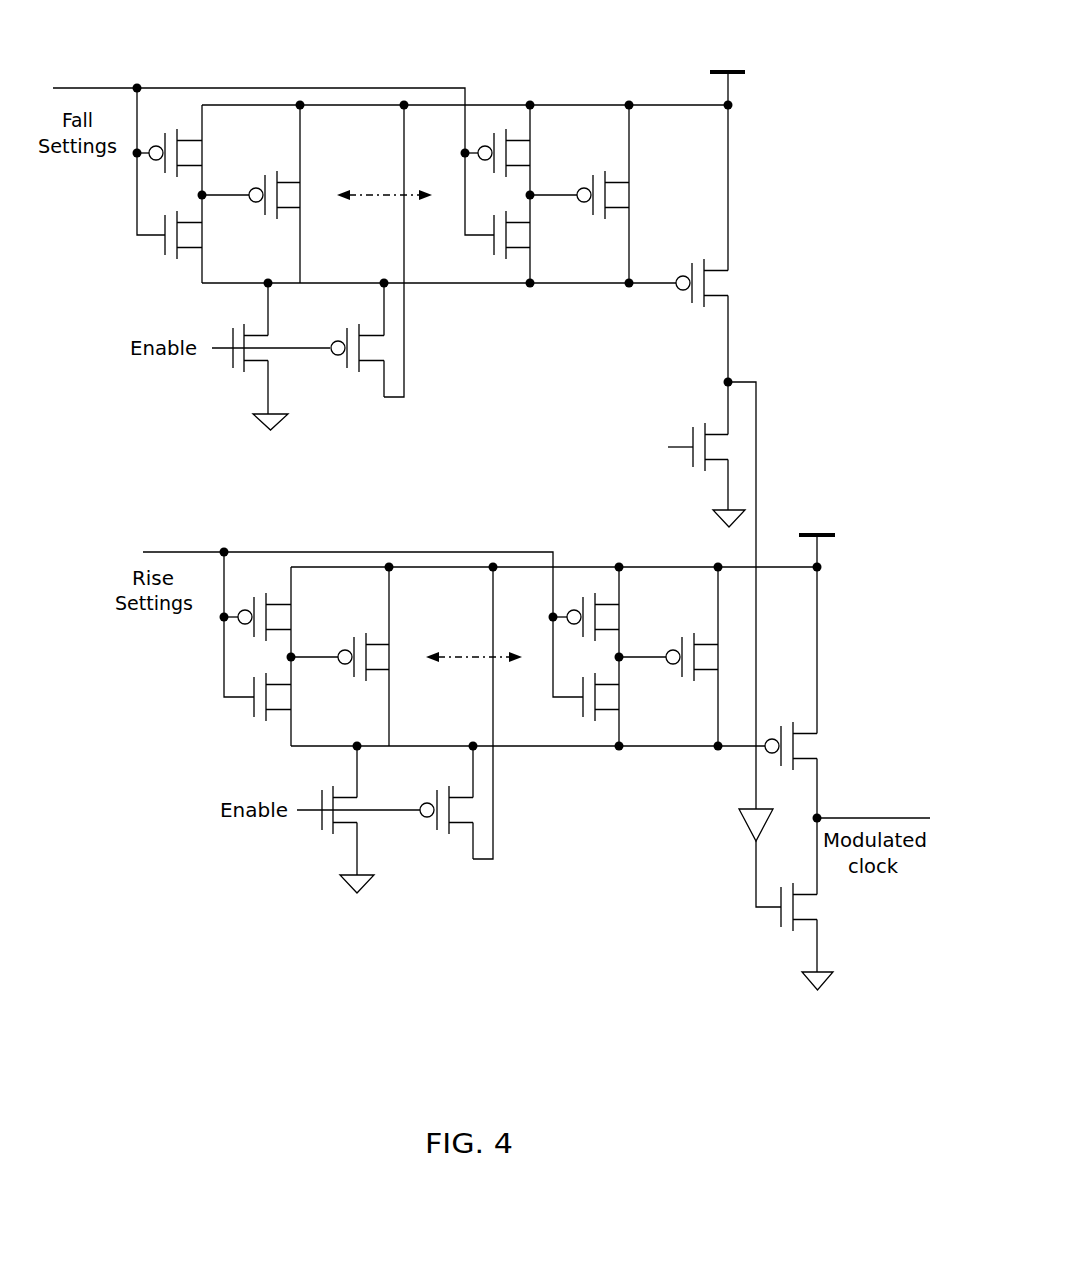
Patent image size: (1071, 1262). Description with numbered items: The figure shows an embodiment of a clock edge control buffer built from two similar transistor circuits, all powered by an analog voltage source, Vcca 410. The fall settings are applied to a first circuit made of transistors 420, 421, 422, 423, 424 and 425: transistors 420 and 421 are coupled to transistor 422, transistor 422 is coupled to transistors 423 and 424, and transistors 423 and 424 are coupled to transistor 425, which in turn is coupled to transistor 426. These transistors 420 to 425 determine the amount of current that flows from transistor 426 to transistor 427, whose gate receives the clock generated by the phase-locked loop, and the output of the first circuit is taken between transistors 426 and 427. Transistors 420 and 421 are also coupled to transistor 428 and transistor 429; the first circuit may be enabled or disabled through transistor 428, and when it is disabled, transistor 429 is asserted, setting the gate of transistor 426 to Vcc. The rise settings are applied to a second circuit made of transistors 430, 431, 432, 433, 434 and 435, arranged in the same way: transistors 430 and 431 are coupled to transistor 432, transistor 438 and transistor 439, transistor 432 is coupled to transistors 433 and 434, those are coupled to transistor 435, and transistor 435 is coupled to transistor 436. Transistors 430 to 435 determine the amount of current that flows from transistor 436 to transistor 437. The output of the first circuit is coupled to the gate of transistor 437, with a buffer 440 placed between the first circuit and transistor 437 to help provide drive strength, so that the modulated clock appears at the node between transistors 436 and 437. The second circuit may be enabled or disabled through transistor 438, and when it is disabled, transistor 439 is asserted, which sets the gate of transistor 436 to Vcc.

The Vcca 410 is at (772, 376).
The transistor 420 is at (196, 153).
The transistor 421 is at (204, 235).
The transistor 422 is at (293, 194).
The transistor 423 is at (525, 153).
The transistor 424 is at (533, 235).
The transistor 425 is at (601, 195).
The transistor 426 is at (724, 347).
The transistor 427 is at (722, 445).
The transistor 428 is at (253, 356).
The transistor 429 is at (357, 342).
The transistor 430 is at (285, 617).
The transistor 431 is at (293, 697).
The transistor 432 is at (378, 658).
The transistor 433 is at (614, 617).
The transistor 434 is at (622, 697).
The transistor 435 is at (683, 657).
The transistor 436 is at (812, 808).
The transistor 437 is at (808, 915).
The transistor 438 is at (336, 819).
The transistor 439 is at (443, 804).
The buffer 440 is at (729, 611).